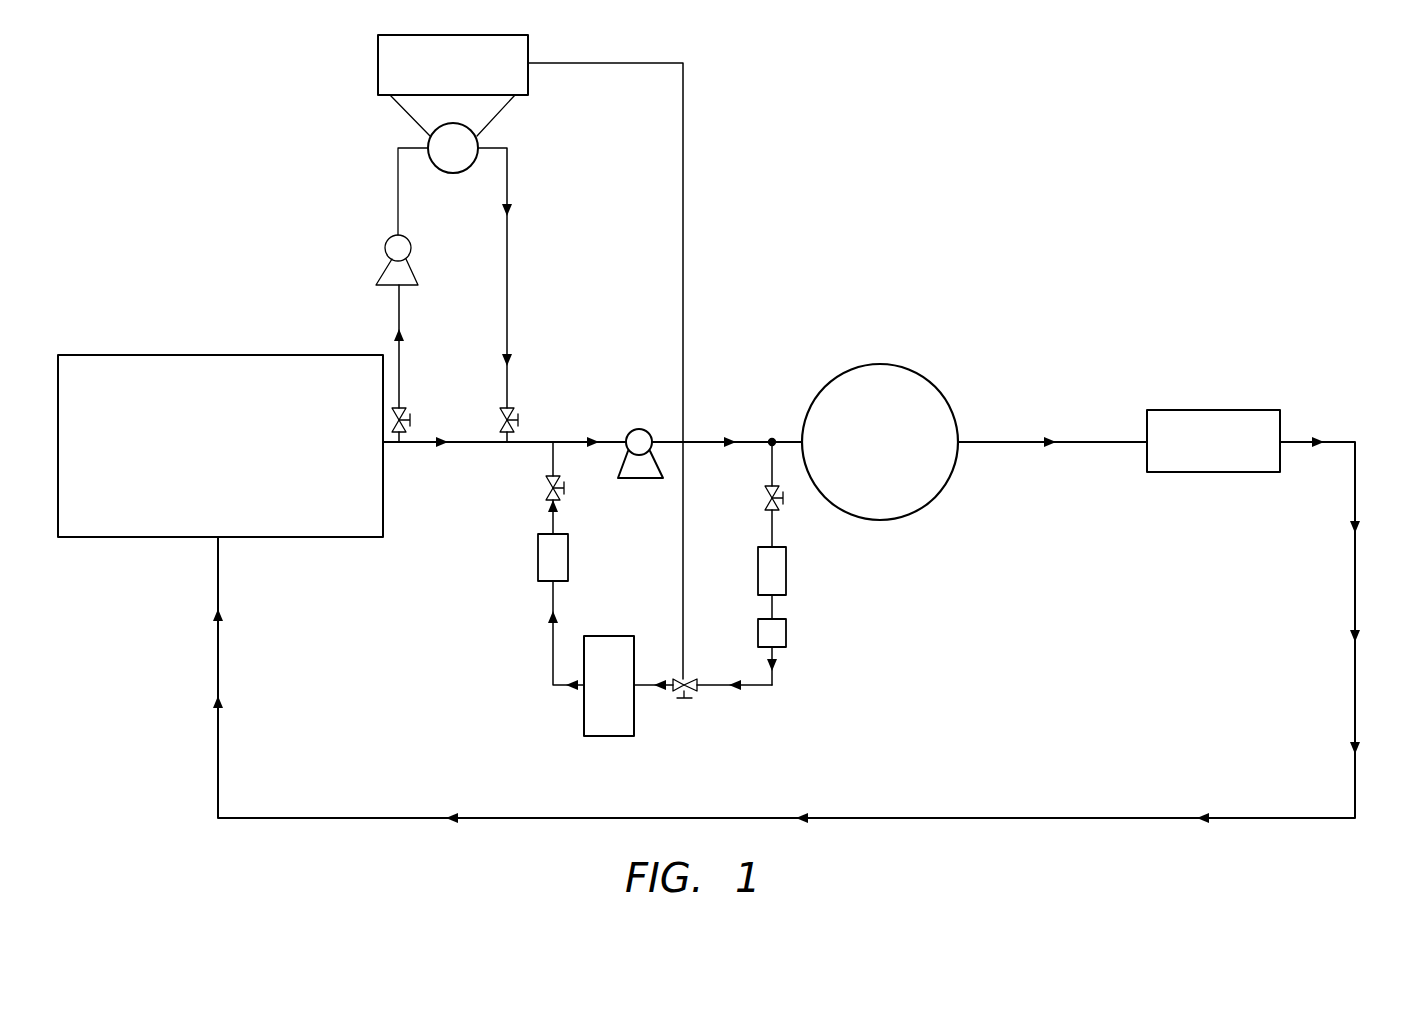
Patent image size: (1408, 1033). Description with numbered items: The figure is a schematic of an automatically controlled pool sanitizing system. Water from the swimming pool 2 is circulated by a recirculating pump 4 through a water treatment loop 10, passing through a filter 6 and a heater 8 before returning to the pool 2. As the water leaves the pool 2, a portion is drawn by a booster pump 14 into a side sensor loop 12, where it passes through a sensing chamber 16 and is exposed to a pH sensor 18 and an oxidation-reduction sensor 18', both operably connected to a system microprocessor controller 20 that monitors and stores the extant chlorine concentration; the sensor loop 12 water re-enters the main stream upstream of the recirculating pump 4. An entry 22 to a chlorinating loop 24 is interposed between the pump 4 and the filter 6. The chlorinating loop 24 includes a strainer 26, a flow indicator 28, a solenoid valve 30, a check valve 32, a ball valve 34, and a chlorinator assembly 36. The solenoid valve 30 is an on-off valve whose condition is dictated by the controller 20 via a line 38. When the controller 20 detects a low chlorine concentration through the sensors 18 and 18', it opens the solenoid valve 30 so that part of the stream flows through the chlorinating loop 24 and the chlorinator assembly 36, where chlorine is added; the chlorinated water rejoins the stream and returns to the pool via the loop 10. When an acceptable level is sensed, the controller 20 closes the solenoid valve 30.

The swimming pool 2 is at (207, 354).
The recirculating pump 4 is at (645, 428).
The filter 6 is at (880, 363).
The heater 8 is at (1217, 421).
The water treatment loop 10 is at (1366, 717).
The side sensor loop 12 is at (551, 265).
The booster pump 14 is at (380, 269).
The sensing chamber 16 is at (453, 173).
The pH sensor 18 is at (370, 119).
The oxidation-reduction sensor 18' is at (524, 119).
The system microprocessor controller 20 is at (439, 80).
The entry 22 is at (772, 440).
The chlorinating loop 24 is at (788, 688).
The strainer 26 is at (786, 572).
The flow indicator 28 is at (786, 631).
The solenoid valve 30 is at (697, 688).
The check valve 32 is at (543, 560).
The ball valve 34 is at (546, 485).
The chlorinator assembly 36 is at (587, 742).
The line 38 is at (683, 220).